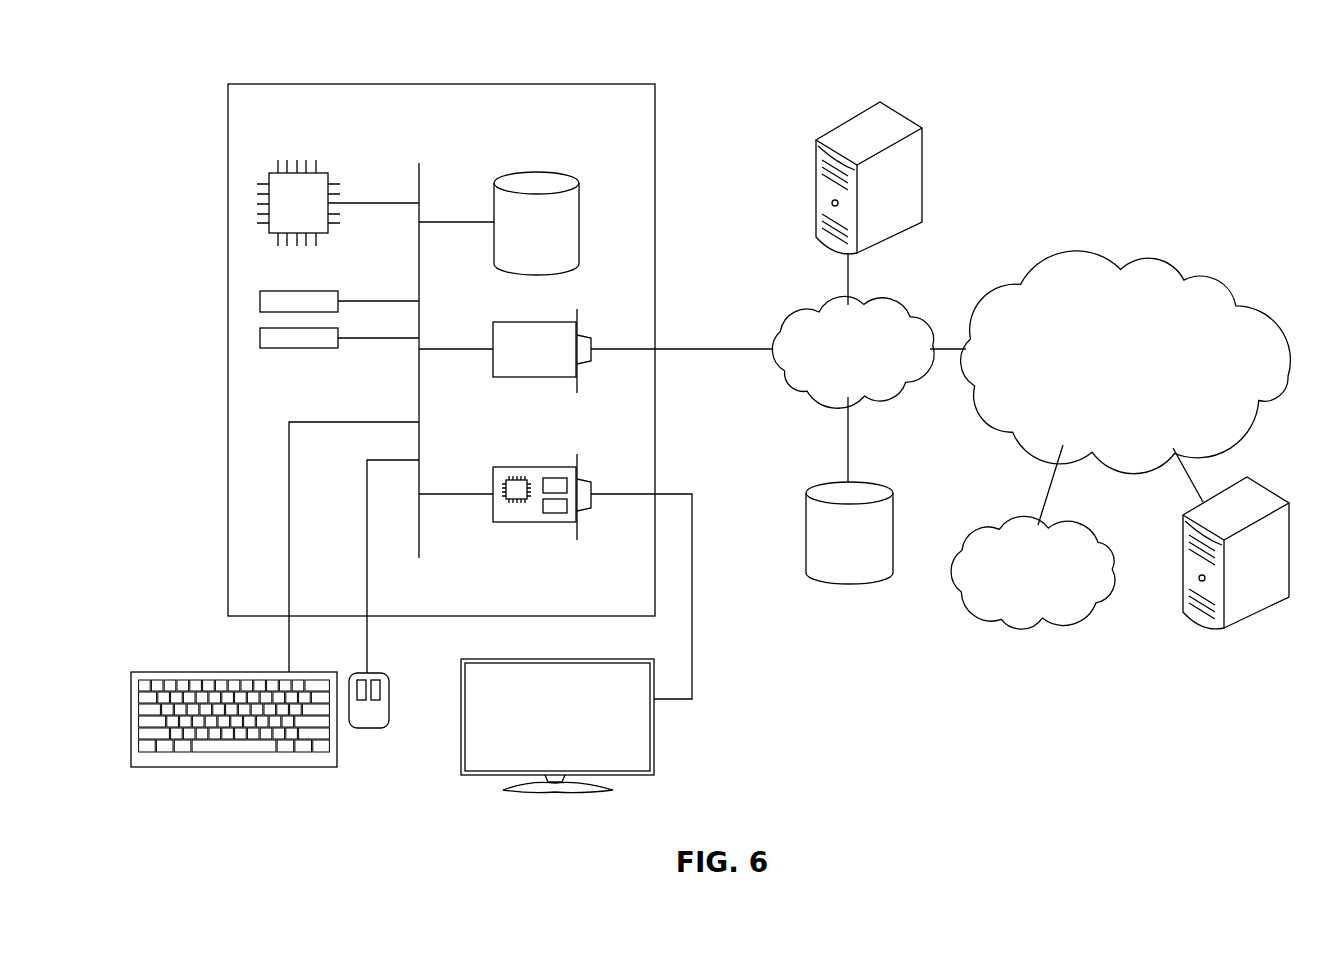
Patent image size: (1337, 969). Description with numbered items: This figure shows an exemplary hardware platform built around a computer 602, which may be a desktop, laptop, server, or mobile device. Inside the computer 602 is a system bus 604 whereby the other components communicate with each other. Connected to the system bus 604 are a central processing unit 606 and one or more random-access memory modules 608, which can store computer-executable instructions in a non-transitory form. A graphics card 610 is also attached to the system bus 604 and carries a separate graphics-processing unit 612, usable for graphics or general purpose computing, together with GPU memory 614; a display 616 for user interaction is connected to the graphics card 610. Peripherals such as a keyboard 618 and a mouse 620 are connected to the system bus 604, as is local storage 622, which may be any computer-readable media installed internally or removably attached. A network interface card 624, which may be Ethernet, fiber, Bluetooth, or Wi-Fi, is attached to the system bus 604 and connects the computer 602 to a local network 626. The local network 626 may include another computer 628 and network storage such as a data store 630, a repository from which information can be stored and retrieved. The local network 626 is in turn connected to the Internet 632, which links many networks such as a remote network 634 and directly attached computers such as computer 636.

The computer 602 is at (583, 84).
The system bus 604 is at (421, 178).
The central processing unit 606 is at (318, 173).
The random-access memory modules 608 is at (260, 338).
The graphics card 610 is at (493, 483).
The graphics-processing unit 612 is at (516, 500).
The GPU memory 614 is at (553, 514).
The display 616 is at (654, 748).
The keyboard 618 is at (222, 768).
The mouse 620 is at (368, 728).
The local storage 622 is at (579, 216).
The network interface card 624 is at (493, 331).
The local network 626 is at (900, 306).
The computer 628 is at (899, 110).
The data store 630 is at (870, 483).
The Internet 632 is at (1097, 269).
The remote network 634 is at (1092, 530).
The computer 636 is at (1265, 487).